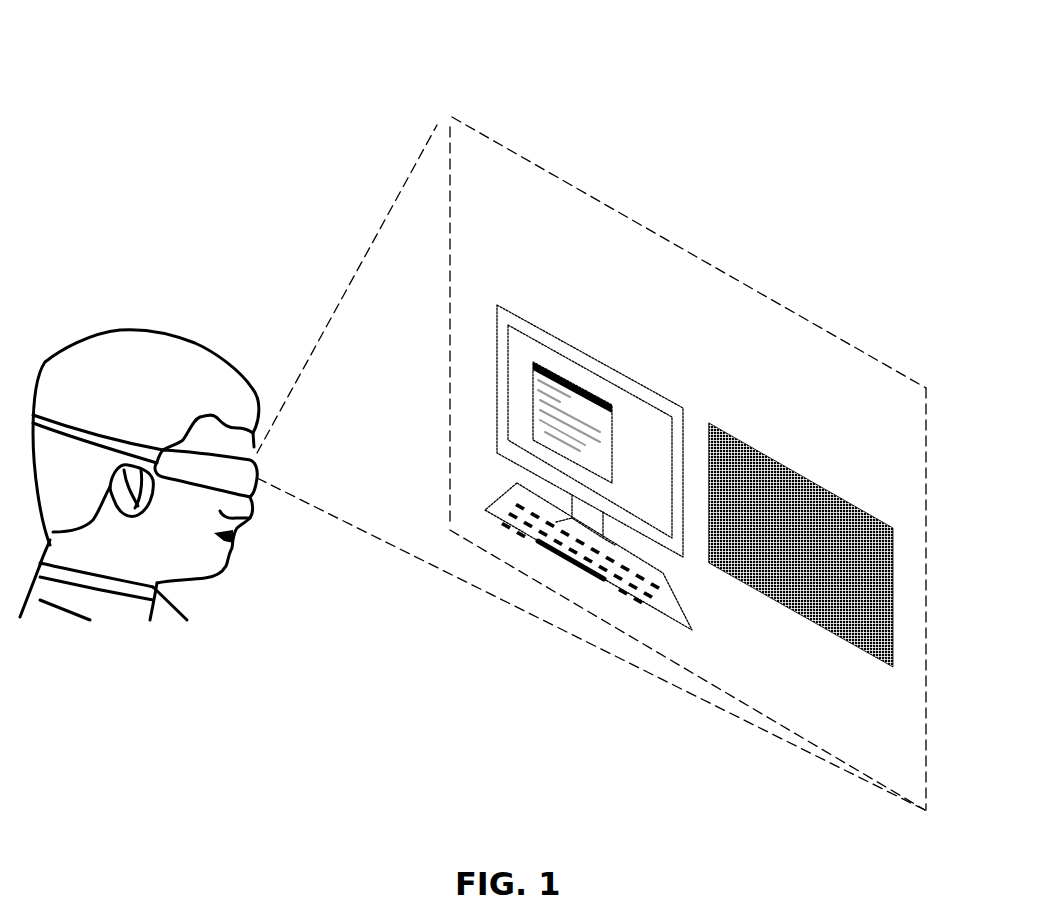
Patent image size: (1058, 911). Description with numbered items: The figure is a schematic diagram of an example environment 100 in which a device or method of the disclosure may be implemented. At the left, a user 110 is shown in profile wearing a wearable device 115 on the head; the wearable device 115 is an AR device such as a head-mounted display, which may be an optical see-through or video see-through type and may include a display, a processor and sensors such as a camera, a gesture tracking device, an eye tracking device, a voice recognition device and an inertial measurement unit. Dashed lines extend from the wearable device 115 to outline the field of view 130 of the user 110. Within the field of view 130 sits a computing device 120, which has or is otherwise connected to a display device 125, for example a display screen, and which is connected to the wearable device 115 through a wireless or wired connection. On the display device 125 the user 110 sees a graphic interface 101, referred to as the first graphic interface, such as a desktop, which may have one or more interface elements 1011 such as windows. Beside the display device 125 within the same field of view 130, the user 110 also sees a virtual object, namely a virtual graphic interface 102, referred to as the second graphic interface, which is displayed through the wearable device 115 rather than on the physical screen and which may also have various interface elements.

The example environment 100 is at (153, 64).
The user 110 is at (162, 333).
The wearable device 115 is at (253, 467).
The field of view 130 is at (869, 360).
The graphic interface 101 is at (590, 431).
The display device 125 is at (628, 403).
The interface element 1011 is at (598, 457).
The computing device 120 is at (663, 607).
The virtual graphic interface 102 is at (801, 545).